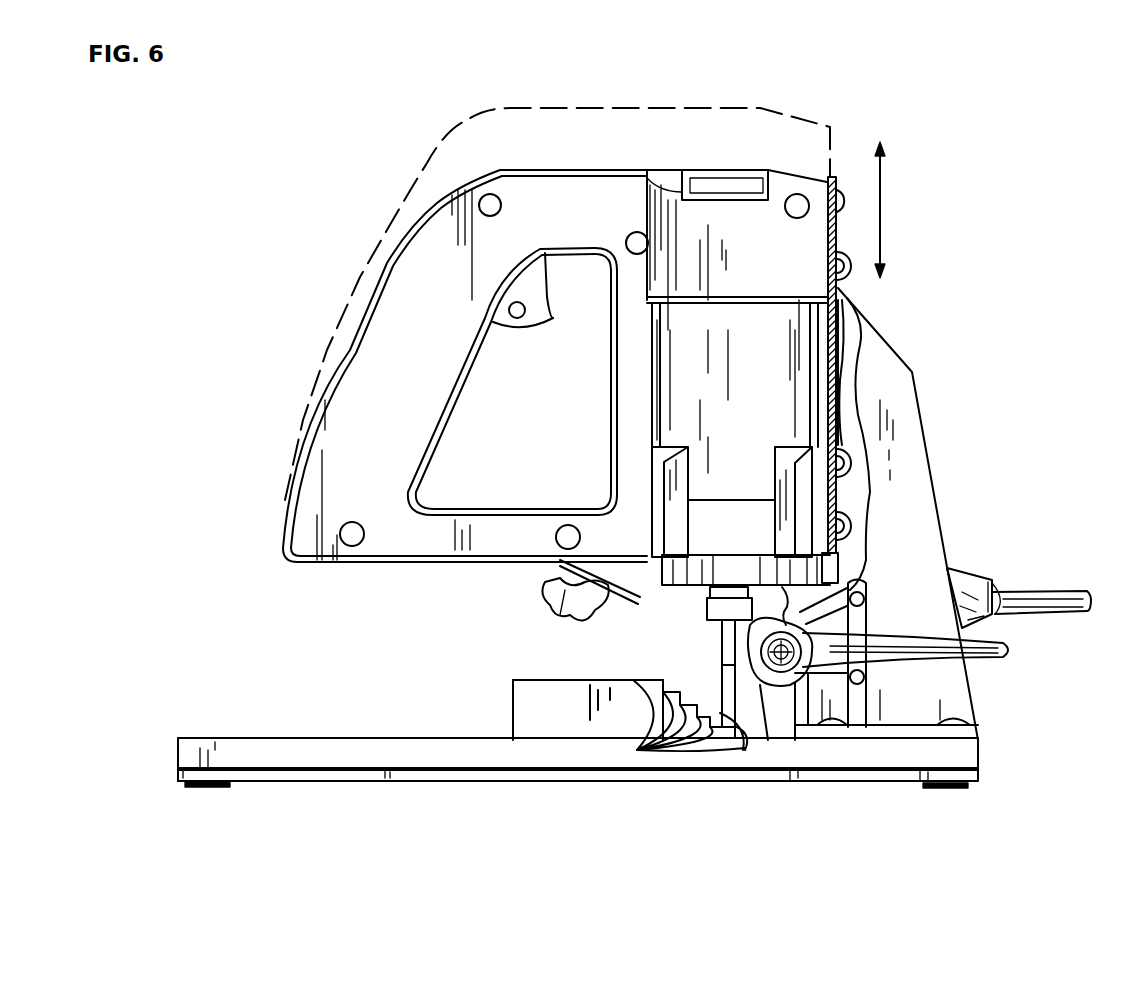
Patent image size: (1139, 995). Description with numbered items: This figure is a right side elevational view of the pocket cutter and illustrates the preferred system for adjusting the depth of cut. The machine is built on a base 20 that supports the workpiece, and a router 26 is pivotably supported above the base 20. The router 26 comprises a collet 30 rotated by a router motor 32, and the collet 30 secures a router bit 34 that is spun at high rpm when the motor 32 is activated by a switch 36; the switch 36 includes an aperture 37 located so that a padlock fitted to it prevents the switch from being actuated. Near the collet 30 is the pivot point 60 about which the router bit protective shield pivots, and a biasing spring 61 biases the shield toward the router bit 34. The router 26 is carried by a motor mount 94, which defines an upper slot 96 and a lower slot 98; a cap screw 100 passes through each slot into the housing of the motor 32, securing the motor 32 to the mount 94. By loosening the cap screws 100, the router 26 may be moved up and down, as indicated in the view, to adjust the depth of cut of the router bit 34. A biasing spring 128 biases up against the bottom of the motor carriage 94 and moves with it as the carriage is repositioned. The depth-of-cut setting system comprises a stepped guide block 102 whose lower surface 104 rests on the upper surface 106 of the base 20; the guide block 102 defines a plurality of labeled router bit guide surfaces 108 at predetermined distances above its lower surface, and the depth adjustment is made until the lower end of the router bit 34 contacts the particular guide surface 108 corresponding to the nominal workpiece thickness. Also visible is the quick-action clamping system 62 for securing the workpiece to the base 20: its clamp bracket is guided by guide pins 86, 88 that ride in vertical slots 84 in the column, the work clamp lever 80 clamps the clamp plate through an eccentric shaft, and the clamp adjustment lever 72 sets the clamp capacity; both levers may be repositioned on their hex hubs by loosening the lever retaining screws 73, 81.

The base 20 is at (190, 752).
The router 26 is at (535, 458).
The collet 30 is at (727, 610).
The router motor 32 is at (745, 388).
The router bit 34 is at (735, 745).
The switch 36 is at (537, 302).
The aperture 37 is at (518, 318).
The pivot point 60 is at (598, 570).
The biasing spring 61 is at (575, 590).
The quick-action clamping system 62 is at (782, 587).
The clamp adjustment lever 72 is at (1073, 593).
The lever retaining screw 73 is at (1002, 597).
The work clamp lever 80 is at (1012, 656).
The lever retaining screw 81 is at (778, 697).
The vertical slots 84 is at (872, 622).
The guide pin 86 is at (865, 594).
The guide pin 88 is at (863, 680).
The motor mount 94 is at (827, 332).
The upper slot 96 is at (836, 226).
The lower slot 98 is at (832, 497).
The cap screw 100 is at (838, 270).
The stepped guide block 102 is at (572, 716).
The lower surface 104 is at (530, 740).
The upper surface 106 is at (236, 740).
The router bit guide surfaces 108 is at (637, 750).
The biasing spring 128 is at (843, 372).